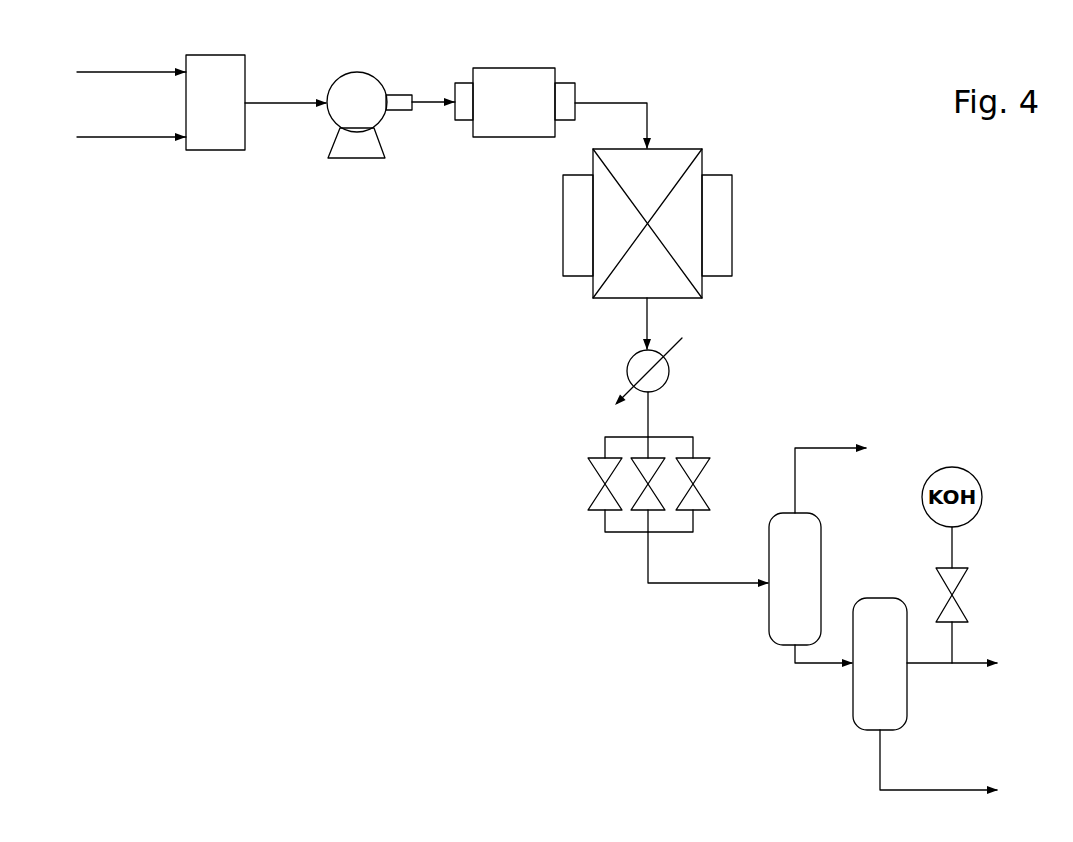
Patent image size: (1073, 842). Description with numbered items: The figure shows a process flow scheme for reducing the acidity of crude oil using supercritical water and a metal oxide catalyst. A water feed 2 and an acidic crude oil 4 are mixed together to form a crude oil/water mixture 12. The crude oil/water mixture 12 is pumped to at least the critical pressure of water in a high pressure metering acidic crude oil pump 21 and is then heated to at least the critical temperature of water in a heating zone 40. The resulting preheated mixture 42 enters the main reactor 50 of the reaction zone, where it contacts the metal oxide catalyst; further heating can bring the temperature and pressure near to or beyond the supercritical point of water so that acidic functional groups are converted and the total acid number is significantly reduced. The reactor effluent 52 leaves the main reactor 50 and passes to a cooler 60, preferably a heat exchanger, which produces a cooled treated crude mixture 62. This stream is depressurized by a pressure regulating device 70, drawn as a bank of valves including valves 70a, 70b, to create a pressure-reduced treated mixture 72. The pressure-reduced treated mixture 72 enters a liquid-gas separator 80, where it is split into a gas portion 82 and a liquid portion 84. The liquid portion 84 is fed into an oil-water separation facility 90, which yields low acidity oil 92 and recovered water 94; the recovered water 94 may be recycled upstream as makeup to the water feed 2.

The water feed 2 is at (122, 72).
The acidic crude oil 4 is at (122, 137).
The crude oil/water mixture 12 is at (268, 103).
The high pressure metering acidic crude oil pump 21 is at (360, 72).
The heating zone 40 is at (518, 68).
The preheated mixture 42 is at (605, 103).
The main reactor 50 is at (665, 149).
The reactor effluent line 52 is at (647, 315).
The cooler 60 is at (669, 371).
The cooled treated crude mixture 62 is at (648, 415).
The pressure regulating device 70 is at (700, 490).
The pressure let-down valve 70a is at (640, 472).
The pressure let-down valve 70b is at (593, 500).
The pressure-reduced treated mixture 72 is at (712, 590).
The liquid-gas separator 80 is at (795, 579).
The gas portion 82 is at (815, 448).
The liquid portion 84 is at (820, 665).
The oil-water separation facility 90 is at (880, 664).
The low acidity oil 92 is at (960, 663).
The recovered water 94 is at (915, 790).